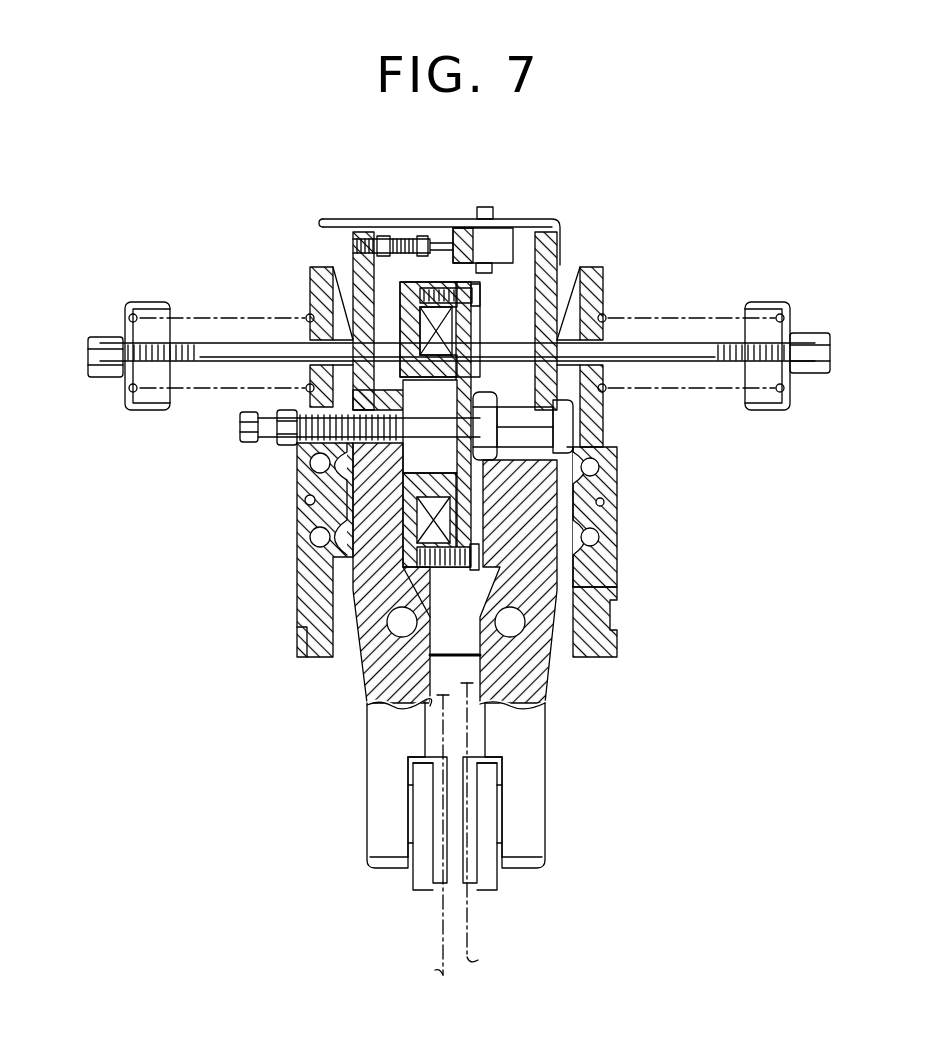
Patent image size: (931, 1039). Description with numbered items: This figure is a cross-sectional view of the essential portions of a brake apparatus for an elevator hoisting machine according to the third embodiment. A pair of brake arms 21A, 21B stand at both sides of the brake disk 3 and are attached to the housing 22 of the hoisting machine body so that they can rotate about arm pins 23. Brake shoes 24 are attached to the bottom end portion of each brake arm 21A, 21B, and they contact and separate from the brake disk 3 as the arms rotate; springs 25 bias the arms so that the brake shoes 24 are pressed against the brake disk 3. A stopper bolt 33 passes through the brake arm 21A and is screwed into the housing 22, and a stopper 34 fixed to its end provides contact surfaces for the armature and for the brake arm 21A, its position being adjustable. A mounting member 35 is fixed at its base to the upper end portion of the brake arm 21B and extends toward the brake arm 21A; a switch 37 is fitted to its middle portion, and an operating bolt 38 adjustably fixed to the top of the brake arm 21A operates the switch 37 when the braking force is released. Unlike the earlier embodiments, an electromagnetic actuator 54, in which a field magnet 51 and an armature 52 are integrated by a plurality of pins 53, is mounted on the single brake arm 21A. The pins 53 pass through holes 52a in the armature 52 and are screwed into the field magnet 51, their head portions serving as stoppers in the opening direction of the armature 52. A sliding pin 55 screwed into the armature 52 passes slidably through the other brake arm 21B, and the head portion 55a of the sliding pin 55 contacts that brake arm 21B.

The brake disk 3 is at (443, 903).
The brake arm 21A is at (368, 835).
The brake arm 21B is at (545, 818).
The housing 22 is at (600, 645).
The arm pin 23 is at (512, 627).
The brake shoe 24 is at (483, 863).
The spring 25 is at (688, 312).
The stopper bolt 33 is at (260, 443).
The stopper 34 is at (398, 482).
The mounting member 35 is at (530, 220).
The switch 37 is at (467, 237).
The operating bolt 38 is at (404, 237).
The field magnet 51 is at (373, 582).
The armature 52 is at (470, 517).
The hole 52a is at (620, 588).
The pin 53 is at (480, 555).
The electromagnetic actuator 54 is at (390, 290).
The sliding pin 55 is at (540, 423).
The bolt head 55a is at (568, 447).